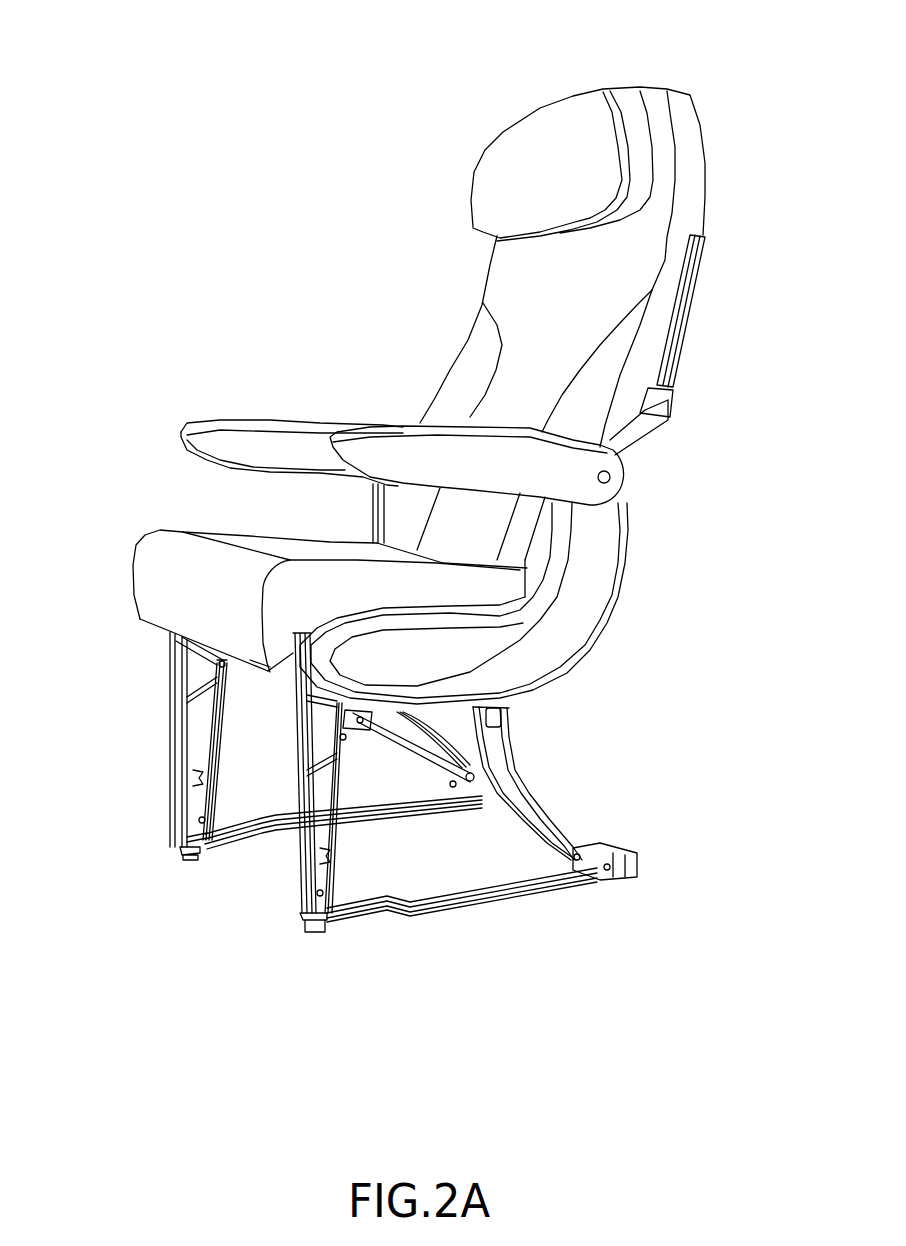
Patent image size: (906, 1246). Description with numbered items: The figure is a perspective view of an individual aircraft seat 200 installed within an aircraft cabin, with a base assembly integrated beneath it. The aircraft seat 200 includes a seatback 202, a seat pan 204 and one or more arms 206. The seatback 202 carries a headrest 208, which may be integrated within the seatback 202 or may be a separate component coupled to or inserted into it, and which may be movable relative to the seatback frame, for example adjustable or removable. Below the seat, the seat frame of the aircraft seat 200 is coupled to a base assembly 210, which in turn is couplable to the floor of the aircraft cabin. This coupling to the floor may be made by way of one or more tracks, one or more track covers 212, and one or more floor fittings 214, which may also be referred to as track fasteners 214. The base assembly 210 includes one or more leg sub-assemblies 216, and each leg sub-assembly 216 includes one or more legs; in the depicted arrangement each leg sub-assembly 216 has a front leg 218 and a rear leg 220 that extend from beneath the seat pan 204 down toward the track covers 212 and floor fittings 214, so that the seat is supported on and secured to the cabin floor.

The aircraft seat 200 is at (213, 56).
The seatback 202 is at (647, 253).
The seat pan 204 is at (493, 590).
The arm 206 is at (578, 467).
The headrest 208 is at (607, 160).
The base assembly 210 is at (115, 628).
The track cover 212 is at (465, 900).
The floor fitting 214 is at (633, 857).
The leg sub-assembly 216 is at (665, 735).
The front leg 218 is at (197, 797).
The rear leg 220 is at (525, 812).